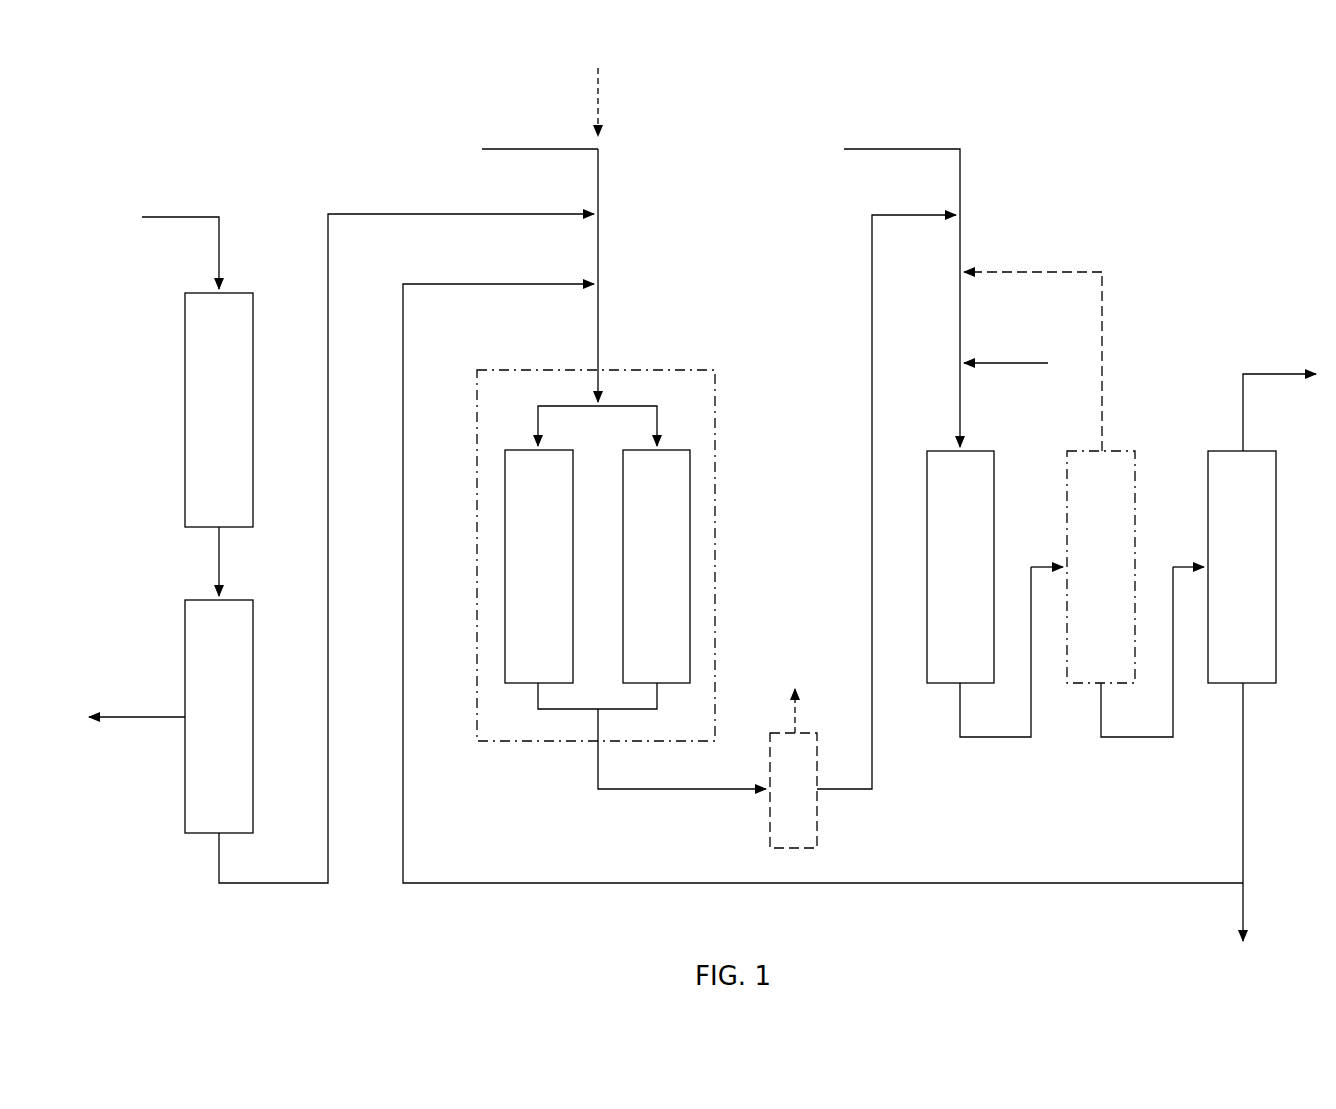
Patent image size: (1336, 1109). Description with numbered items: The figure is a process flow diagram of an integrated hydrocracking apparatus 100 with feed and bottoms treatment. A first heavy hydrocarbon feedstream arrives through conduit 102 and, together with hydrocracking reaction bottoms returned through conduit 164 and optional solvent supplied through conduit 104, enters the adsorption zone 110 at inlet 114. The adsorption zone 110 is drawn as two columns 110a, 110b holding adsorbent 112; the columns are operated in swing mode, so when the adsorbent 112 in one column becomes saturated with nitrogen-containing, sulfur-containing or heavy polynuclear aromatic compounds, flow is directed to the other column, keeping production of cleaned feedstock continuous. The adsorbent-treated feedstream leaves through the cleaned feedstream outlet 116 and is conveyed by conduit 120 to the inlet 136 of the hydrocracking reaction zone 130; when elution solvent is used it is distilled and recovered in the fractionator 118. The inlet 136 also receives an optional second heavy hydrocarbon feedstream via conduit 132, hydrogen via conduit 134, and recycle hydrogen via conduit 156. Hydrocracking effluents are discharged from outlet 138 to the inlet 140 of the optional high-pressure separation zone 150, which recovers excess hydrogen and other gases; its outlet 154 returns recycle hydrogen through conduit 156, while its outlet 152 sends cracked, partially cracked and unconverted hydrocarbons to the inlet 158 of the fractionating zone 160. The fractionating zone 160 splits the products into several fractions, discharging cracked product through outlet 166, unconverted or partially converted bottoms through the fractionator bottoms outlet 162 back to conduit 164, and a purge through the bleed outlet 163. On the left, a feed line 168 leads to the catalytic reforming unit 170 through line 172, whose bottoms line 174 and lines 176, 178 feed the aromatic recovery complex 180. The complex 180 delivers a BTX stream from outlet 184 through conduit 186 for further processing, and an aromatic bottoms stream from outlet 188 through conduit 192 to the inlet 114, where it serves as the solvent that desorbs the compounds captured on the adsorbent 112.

The integrated hydrocracking apparatus 100 is at (398, 170).
The conduit 102 is at (540, 149).
The conduit 104 is at (598, 108).
The adsorption zone 110 is at (490, 407).
The column 110a is at (512, 584).
The column 110b is at (631, 584).
The adsorbent 112 is at (515, 495).
The inlet 114 is at (598, 343).
The cleaned feedstream outlet 116 is at (598, 765).
The fractionator 118 is at (817, 812).
The conduit 120 is at (872, 575).
The hydrocracking reaction zone 130 is at (983, 584).
The conduit 132 is at (905, 149).
The conduit 134 is at (1005, 363).
The inlet 136 is at (960, 420).
The outlet 138 is at (960, 725).
The inlet 140 is at (1050, 567).
The high-pressure separation zone 150 is at (1124, 584).
The outlet 152 is at (1101, 725).
The outlet 154 is at (1102, 360).
The conduit 156 is at (1035, 272).
The inlet 158 is at (1190, 567).
The fractionating zone 160 is at (1220, 584).
The fractionator bottoms outlet 162 is at (1246, 688).
The bleed outlet 163 is at (1243, 908).
The conduit 164 is at (540, 284).
The outlet 166 is at (1280, 374).
The feed stream 168 is at (180, 217).
The catalytic reforming unit 170 is at (197, 424).
The inlet line 172 is at (219, 289).
The bottoms line 174 is at (219, 532).
The inlet line 176 is at (219, 597).
The transfer line 178 is at (219, 566).
The aromatic recovery complex 180 is at (197, 732).
The outlet 184 is at (183, 717).
The conduit 186 is at (135, 717).
The outlet 188 is at (219, 838).
The conduit 192 is at (272, 883).